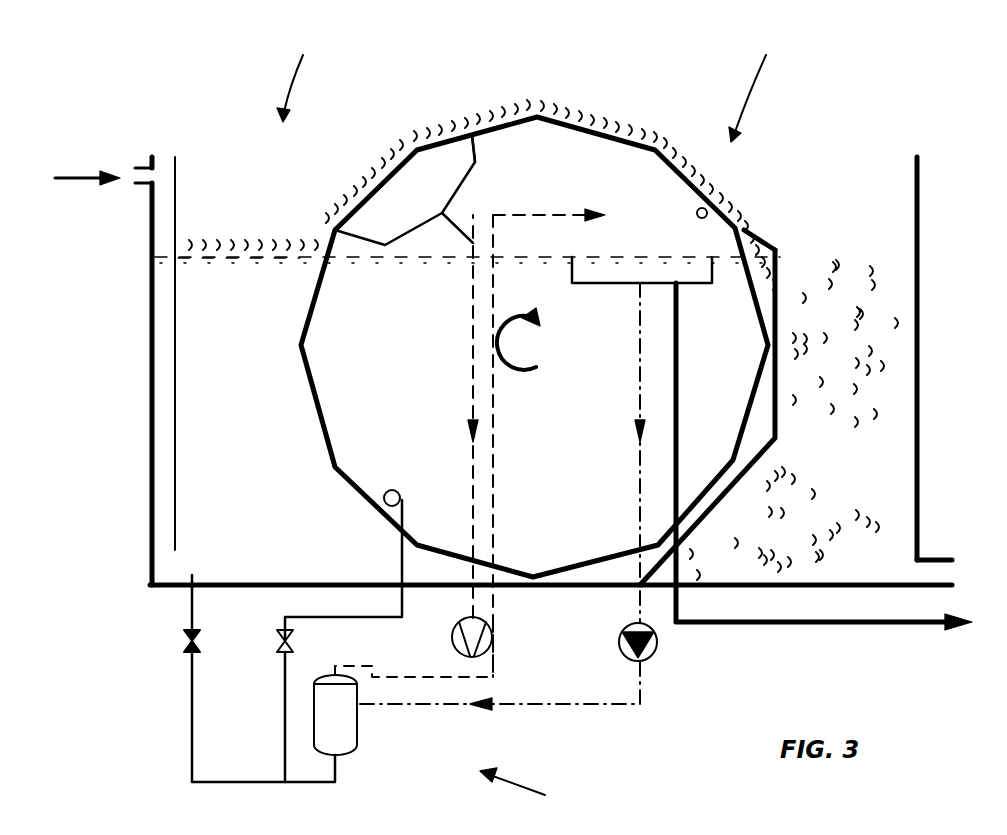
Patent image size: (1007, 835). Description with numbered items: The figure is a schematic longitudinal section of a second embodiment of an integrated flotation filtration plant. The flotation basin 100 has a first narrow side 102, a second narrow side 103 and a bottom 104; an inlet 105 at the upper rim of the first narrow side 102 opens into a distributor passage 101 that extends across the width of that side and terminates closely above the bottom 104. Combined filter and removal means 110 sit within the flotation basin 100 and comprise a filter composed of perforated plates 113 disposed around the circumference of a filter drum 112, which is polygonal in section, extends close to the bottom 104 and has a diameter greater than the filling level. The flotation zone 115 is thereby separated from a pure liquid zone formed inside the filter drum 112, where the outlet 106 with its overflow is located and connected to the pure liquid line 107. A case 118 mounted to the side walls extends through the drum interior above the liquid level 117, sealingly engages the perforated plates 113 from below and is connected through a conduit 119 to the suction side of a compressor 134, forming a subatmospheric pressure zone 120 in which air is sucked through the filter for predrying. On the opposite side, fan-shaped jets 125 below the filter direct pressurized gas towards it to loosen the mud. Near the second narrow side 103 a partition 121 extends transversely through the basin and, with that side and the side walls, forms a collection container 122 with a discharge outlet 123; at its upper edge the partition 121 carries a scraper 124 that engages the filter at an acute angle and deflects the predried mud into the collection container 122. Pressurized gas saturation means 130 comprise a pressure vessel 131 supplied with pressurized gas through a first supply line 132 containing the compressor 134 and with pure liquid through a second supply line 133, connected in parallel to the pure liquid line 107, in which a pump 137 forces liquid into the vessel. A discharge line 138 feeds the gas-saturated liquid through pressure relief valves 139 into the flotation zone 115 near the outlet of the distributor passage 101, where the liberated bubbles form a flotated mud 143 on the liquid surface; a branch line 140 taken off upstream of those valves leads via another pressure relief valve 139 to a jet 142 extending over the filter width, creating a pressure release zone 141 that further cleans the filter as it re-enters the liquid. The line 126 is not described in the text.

The flotation basin 100 is at (315, 88).
The distributor passage 101 is at (165, 278).
The first narrow side 102 is at (150, 372).
The second narrow side 103 is at (920, 278).
The bottom 104 is at (275, 582).
The inlet 105 is at (145, 167).
The outlet 106 is at (642, 271).
The pure liquid line 107 is at (800, 625).
The combined filter and removal means 110 is at (770, 98).
The filter drum 112 is at (541, 410).
The perforated plates 113 is at (316, 388).
The flotation zone 115 is at (239, 334).
The liquid level 117 is at (236, 262).
The case 118 is at (502, 165).
The conduit 119 is at (510, 443).
The subatmospheric pressure zone 120 is at (405, 190).
The partition 121 is at (745, 417).
The collection container 122 is at (794, 420).
The discharge outlet 123 is at (940, 558).
The scraper 124 is at (765, 238).
The fan-shaped jets 125 is at (697, 210).
The feed line 126 is at (493, 432).
The pressurized gas saturation means 130 is at (539, 797).
The pressure vessel 131 is at (345, 727).
The first supply line 132 is at (414, 658).
The second supply line 133 is at (550, 706).
The compressor 134 is at (492, 640).
The pump 137 is at (657, 648).
The discharge line 138 is at (185, 760).
The pressure relief valve 139 is at (280, 648).
The branch line 140 is at (285, 760).
The pressure release zone 141 is at (343, 570).
The jet 142 is at (410, 488).
The flotated mud 143 is at (205, 247).